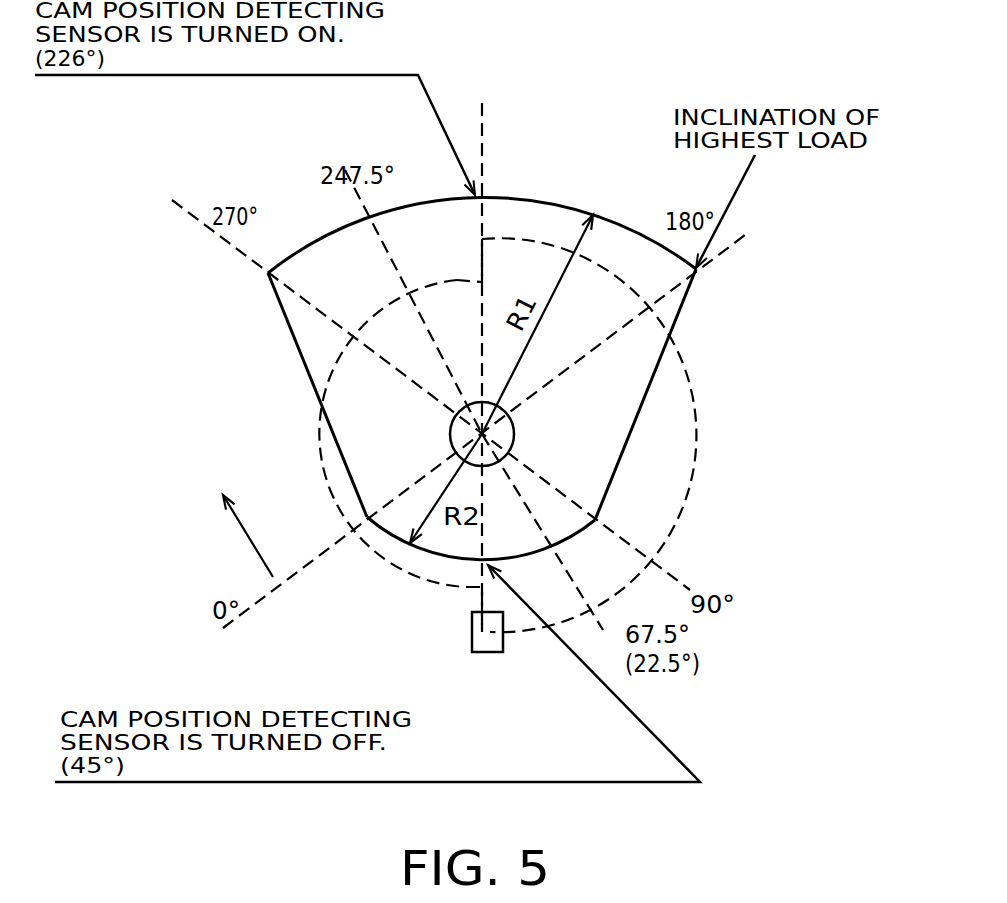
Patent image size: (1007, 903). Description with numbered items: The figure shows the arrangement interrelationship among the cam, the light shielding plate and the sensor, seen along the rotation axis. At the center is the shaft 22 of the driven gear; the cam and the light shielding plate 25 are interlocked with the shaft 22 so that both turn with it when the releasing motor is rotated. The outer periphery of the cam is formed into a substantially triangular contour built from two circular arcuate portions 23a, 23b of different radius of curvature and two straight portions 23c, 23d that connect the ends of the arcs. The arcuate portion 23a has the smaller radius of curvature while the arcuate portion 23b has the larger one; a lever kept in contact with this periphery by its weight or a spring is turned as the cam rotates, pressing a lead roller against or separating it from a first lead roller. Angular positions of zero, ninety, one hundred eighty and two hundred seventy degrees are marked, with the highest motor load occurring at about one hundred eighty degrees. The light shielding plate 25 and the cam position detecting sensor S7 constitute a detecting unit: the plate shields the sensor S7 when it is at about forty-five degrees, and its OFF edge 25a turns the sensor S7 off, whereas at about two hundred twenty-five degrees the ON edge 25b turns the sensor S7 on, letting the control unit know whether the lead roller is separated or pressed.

The shaft 22 is at (451, 434).
The circular arcuate portion 23a is at (412, 549).
The circular arcuate portion 23b is at (558, 197).
The straight portion 23c is at (655, 372).
The straight portion 23d is at (294, 341).
The light shielding plate 25 is at (700, 455).
The OFF edge 25a is at (470, 597).
The ON edge 25b is at (480, 262).
The cam position detecting sensor S7 is at (472, 640).